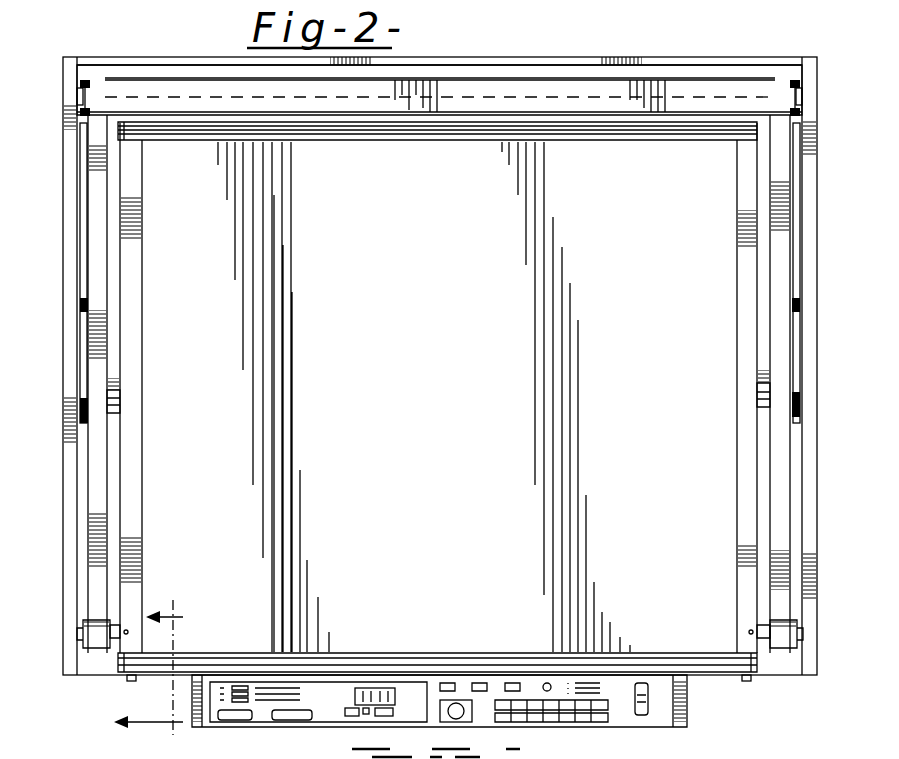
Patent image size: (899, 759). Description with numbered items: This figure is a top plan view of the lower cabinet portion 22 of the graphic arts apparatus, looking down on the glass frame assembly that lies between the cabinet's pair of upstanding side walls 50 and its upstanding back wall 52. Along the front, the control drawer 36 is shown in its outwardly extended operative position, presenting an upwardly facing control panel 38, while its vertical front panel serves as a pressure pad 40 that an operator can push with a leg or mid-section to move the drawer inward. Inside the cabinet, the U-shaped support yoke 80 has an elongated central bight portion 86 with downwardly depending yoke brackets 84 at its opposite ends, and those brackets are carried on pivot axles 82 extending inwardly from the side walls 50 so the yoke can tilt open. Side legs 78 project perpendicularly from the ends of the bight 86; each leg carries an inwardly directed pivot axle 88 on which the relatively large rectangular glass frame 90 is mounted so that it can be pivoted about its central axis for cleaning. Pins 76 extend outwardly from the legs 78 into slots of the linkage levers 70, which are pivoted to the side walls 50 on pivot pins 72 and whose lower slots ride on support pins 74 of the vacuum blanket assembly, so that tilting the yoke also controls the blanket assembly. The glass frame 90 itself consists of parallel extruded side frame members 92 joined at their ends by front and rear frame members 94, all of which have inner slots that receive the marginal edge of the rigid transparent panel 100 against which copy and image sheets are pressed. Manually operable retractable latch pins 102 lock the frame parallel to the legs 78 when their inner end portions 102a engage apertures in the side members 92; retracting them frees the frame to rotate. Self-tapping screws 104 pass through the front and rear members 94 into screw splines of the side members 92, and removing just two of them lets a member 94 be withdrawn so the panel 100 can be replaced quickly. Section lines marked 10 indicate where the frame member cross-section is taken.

The section line 10 is at (153, 672).
The lower cabinet portion 22 is at (62, 447).
The control drawer 36 is at (641, 716).
The control panel 38 is at (535, 699).
The pressure pad 40 is at (272, 728).
The side walls 50 is at (64, 345).
The back wall 52 is at (612, 68).
The linkage levers 70 is at (76, 243).
The pivot pins 72 is at (86, 305).
The support pins 74 is at (89, 405).
The pins 76 is at (86, 155).
The side legs 78 is at (106, 500).
The support yoke 80 is at (712, 78).
The pivot axles 82 is at (78, 95).
The yoke brackets 84 is at (90, 95).
The bight portion 86 is at (330, 103).
The pivot axle 88 is at (114, 390).
The glass frame 90 is at (128, 564).
The side frame members 92 is at (130, 527).
The front and rear frame members 94 is at (463, 125).
The transparent panel 100 is at (433, 380).
The latch pins 102 is at (83, 628).
The inner end portions 102a is at (122, 632).
The self-tapping screws 104 is at (131, 682).